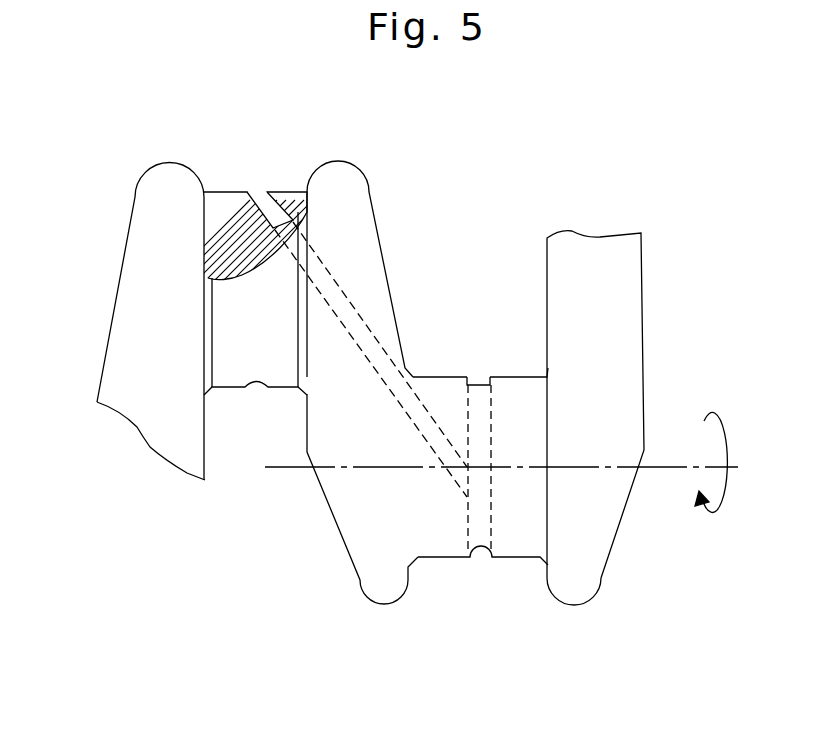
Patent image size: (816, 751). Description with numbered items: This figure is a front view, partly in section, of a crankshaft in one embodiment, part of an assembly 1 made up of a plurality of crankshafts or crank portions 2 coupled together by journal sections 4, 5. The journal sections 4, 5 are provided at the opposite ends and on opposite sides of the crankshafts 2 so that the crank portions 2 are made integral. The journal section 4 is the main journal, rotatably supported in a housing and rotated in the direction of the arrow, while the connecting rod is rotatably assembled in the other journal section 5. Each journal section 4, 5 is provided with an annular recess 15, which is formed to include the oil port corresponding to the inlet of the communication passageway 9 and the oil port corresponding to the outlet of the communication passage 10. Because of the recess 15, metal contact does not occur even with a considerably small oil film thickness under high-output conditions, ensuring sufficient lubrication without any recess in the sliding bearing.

The assembly 1 is at (385, 203).
The crankshaft 2 is at (137, 373).
The journal section 4 is at (535, 512).
The journal section 5 is at (250, 307).
The communication passageway 9 is at (485, 538).
The communication passage 10 is at (337, 287).
The recess 15 is at (258, 192).